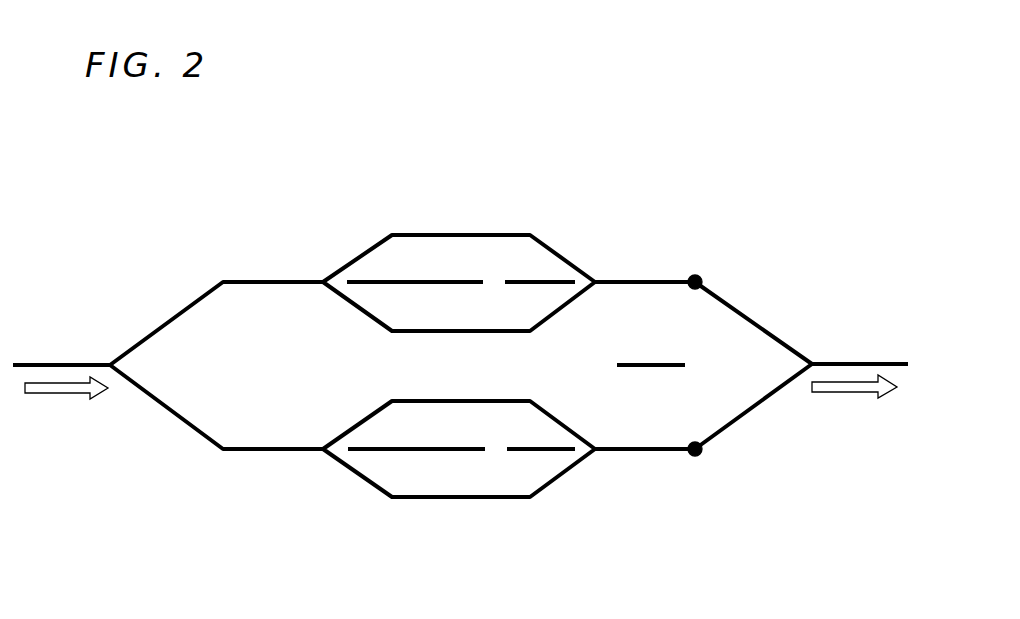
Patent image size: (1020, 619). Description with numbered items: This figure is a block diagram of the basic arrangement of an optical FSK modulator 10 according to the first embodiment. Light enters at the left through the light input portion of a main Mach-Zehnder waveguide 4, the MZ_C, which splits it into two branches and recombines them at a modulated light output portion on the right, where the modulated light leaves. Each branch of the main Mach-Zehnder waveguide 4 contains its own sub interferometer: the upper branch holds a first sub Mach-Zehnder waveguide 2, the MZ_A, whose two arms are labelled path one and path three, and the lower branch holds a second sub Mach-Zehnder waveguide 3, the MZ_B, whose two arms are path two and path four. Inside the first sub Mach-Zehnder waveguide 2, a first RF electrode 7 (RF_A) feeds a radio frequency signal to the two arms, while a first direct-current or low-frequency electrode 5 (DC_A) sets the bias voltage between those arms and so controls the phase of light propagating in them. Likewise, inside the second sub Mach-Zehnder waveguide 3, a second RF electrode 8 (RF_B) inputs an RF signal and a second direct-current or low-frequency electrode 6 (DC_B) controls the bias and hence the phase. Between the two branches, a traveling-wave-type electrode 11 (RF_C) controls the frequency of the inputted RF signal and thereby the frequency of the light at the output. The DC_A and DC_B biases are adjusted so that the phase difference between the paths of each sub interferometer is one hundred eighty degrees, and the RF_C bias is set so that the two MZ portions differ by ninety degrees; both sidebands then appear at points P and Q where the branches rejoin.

The optical FSK modulator 10 is at (690, 188).
The first sub Mach-Zehnder waveguide 2 is at (558, 253).
The second sub Mach-Zehnder waveguide 3 is at (558, 477).
The main Mach-Zehnder waveguide 4 is at (743, 312).
The first direct-current or low-frequency electrode 5 is at (527, 280).
The second direct-current or low-frequency electrode 6 is at (527, 452).
The first RF electrode 7 is at (425, 280).
The second RF electrode 8 is at (425, 452).
The traveling-wave-type electrode 11 is at (650, 348).